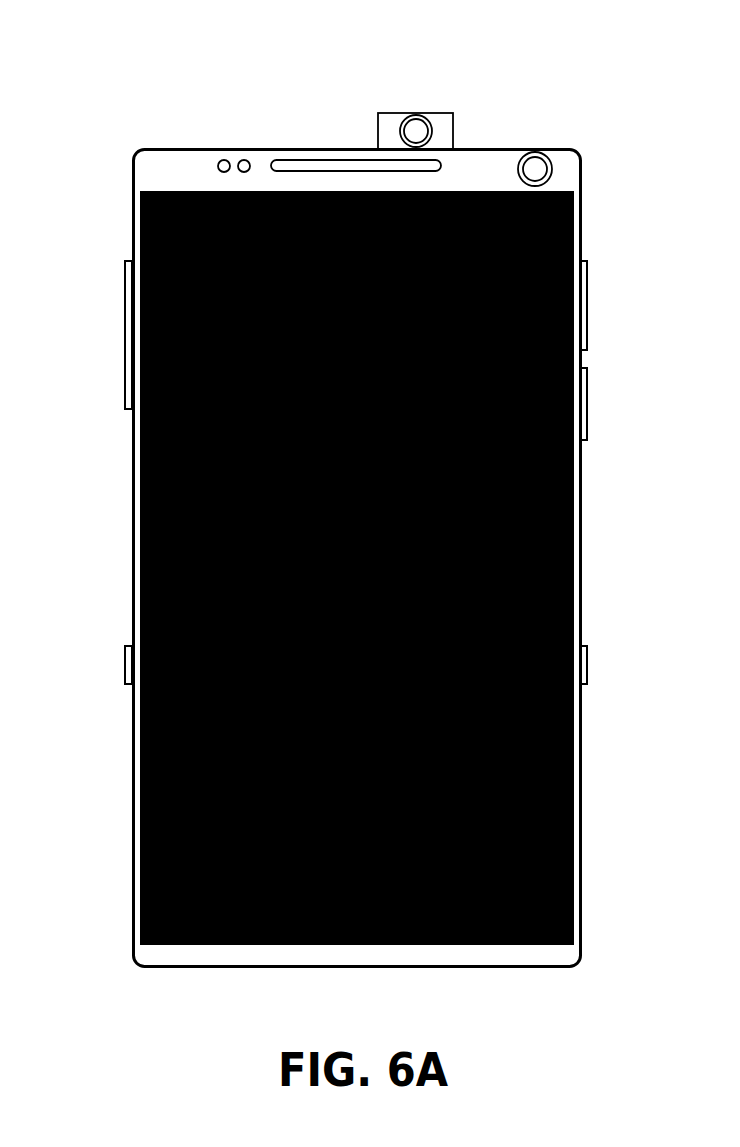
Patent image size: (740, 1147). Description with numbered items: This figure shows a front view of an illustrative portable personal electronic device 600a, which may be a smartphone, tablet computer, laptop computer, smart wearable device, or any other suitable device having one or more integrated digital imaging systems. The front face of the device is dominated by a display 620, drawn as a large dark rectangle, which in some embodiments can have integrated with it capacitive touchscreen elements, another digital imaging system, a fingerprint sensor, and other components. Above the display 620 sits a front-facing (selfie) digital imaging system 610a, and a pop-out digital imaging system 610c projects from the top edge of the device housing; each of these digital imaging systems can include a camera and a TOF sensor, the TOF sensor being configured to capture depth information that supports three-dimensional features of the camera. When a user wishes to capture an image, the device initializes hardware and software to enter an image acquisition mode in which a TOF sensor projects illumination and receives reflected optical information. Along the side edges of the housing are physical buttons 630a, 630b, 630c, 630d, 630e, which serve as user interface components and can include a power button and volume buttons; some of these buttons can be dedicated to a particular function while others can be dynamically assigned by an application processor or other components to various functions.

The portable personal electronic device 600a is at (518, 62).
The front-facing digital imaging system 610a is at (537, 145).
The pop-out digital imaging system 610c is at (392, 105).
The display 620 is at (510, 867).
The physical button 630a is at (580, 298).
The physical button 630b is at (580, 393).
The physical button 630c is at (115, 317).
The physical button 630d is at (114, 660).
The physical button 630e is at (580, 657).